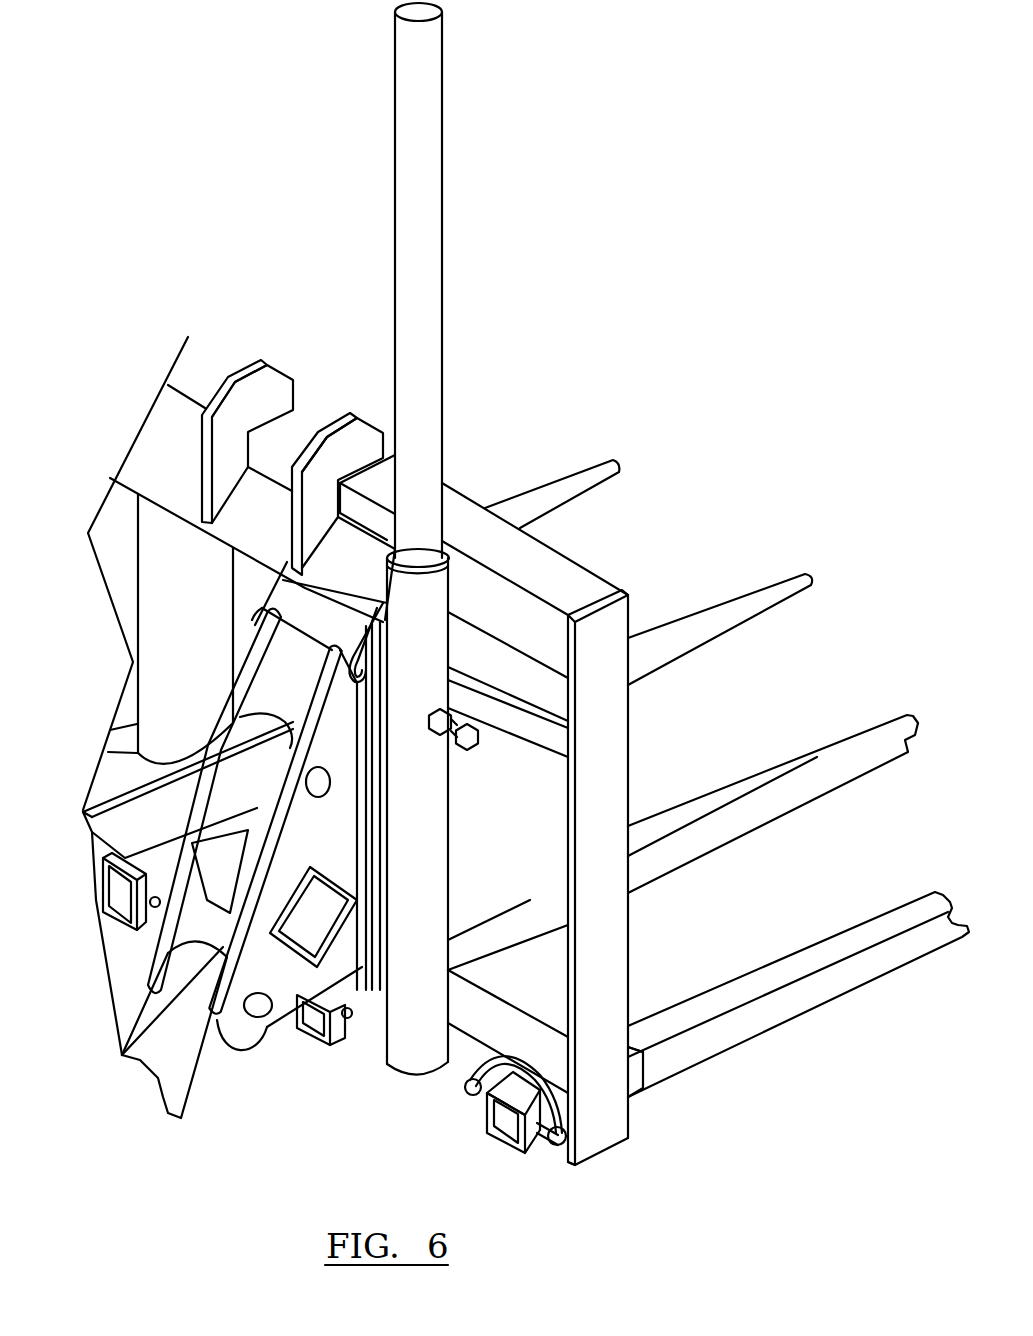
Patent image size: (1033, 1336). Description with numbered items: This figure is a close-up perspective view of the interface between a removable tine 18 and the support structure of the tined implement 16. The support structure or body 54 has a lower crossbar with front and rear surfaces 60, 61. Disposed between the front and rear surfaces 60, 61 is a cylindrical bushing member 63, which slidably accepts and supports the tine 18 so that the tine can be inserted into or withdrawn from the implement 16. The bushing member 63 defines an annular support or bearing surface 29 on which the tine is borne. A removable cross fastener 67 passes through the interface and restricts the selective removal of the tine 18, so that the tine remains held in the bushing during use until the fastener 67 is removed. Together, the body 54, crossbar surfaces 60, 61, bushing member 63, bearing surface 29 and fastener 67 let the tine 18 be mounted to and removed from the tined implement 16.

The tined implement 16 is at (607, 1132).
The removable tine 18 is at (827, 973).
The bearing surface 29 is at (584, 1160).
The support structure 54 is at (643, 1088).
The front surface 60 is at (515, 1028).
The rear surface 61 is at (470, 1090).
The cylindrical bushing member 63 is at (645, 1088).
The removable cross fastener 67 is at (513, 1150).